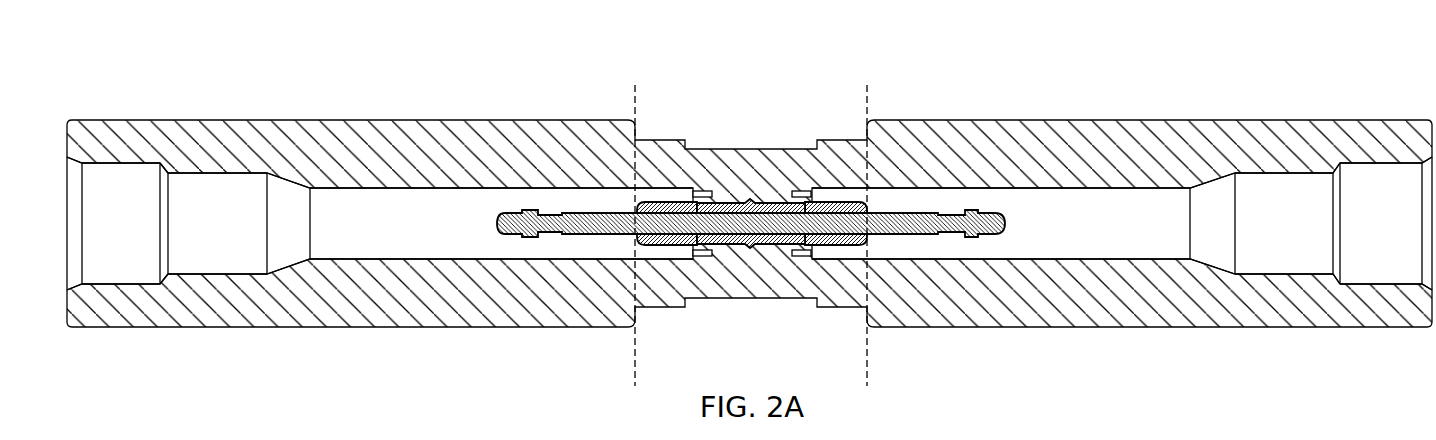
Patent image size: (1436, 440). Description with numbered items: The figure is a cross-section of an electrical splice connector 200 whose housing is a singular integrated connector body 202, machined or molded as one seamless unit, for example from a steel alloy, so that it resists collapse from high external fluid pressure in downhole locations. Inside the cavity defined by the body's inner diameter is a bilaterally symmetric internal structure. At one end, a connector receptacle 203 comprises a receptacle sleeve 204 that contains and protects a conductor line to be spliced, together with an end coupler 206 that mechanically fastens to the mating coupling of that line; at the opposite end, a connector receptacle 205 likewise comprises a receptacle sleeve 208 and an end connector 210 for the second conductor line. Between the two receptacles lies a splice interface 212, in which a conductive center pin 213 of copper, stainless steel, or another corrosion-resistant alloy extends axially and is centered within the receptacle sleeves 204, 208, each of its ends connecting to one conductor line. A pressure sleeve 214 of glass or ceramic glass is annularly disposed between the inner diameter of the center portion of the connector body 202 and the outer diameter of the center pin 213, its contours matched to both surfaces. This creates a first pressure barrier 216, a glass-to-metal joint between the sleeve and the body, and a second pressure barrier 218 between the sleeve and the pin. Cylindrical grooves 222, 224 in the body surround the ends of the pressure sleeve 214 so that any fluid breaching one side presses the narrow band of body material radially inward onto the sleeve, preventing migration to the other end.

The electrical splice connector 200 is at (680, 87).
The connector body 202 is at (500, 145).
The connector receptacle 203 is at (216, 171).
The receptacle sleeve 204 is at (410, 203).
The connector receptacle 205 is at (1285, 171).
The end coupler 206 is at (122, 170).
The receptacle sleeve 208 is at (1092, 203).
The end connector 210 is at (1381, 172).
The splice interface 212 is at (866, 371).
The center pin 213 is at (580, 238).
The pressure sleeve 214 is at (750, 201).
The first pressure barrier 216 is at (725, 198).
The second pressure barrier 218 is at (782, 200).
The cylindrical groove 222 is at (697, 256).
The cylindrical groove 224 is at (803, 256).